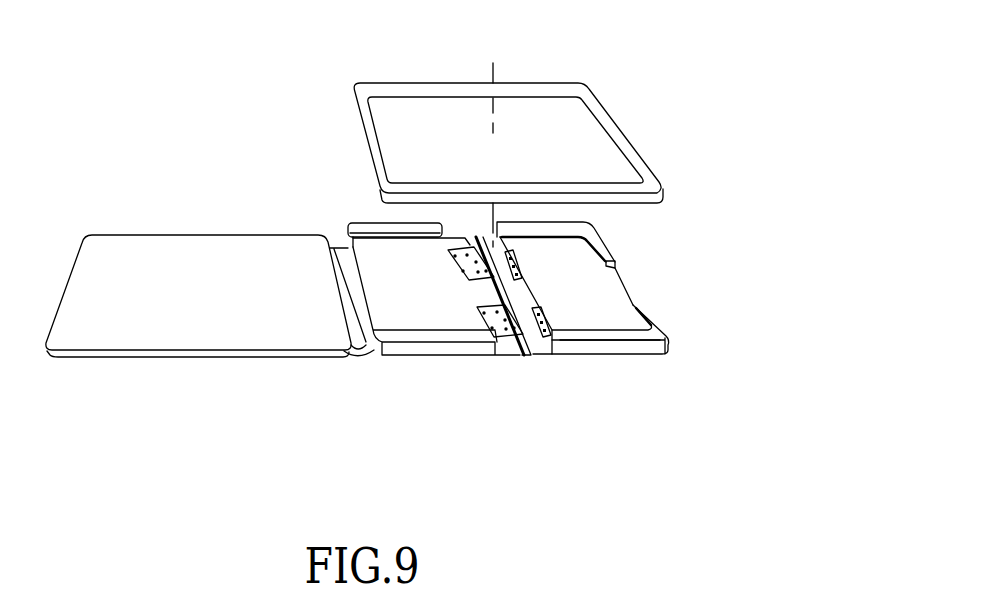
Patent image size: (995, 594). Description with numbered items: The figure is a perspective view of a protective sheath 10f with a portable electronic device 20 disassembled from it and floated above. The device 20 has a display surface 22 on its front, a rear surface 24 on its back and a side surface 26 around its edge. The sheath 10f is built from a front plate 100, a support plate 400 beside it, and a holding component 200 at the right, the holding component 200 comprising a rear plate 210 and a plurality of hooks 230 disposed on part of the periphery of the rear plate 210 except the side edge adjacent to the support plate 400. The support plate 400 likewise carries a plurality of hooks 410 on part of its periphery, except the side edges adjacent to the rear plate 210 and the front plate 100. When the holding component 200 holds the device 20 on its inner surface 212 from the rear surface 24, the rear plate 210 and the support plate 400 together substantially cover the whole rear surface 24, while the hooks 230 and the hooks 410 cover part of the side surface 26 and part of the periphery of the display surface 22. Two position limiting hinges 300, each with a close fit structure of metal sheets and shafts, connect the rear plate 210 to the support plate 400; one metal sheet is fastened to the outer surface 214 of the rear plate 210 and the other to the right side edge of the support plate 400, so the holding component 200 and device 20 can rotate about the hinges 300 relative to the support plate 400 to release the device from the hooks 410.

The portable electronic device 20 is at (530, 134).
The display surface 22 is at (410, 104).
The rear surface 24 is at (641, 204).
The side surface 26 is at (628, 138).
The protective sheath 10f is at (409, 335).
The front plate 100 is at (313, 357).
The support plate 400 is at (390, 311).
The hooks 410 is at (378, 230).
The position limiting hinge 300 is at (527, 357).
The holding component 200 is at (635, 335).
The rear plate 210 is at (547, 357).
The inner surface 212 is at (616, 302).
The outer surface 214 is at (648, 358).
The hooks 230 is at (610, 366).